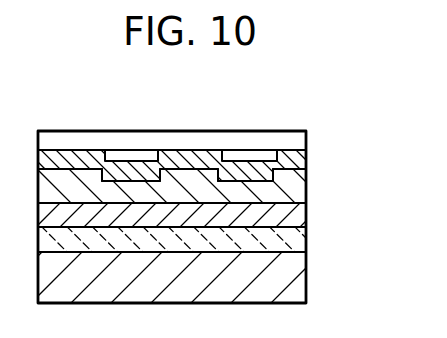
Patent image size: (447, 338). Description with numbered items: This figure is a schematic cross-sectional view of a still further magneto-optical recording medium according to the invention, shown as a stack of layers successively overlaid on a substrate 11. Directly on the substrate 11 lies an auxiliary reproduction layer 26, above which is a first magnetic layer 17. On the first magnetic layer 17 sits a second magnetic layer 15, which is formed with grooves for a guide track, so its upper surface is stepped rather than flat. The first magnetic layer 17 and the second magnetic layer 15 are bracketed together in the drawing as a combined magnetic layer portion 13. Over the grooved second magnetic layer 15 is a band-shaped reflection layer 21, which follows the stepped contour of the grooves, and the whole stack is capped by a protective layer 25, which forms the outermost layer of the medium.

The substrate 11 is at (307, 283).
The magnetic recording layer 13 is at (218, 198).
The second magnetic layer 15 is at (304, 189).
The first magnetic layer 17 is at (304, 213).
The band-shaped reflection layer 21 is at (214, 155).
The protective layer 25 is at (307, 142).
The auxiliary reproduction layer 26 is at (307, 240).